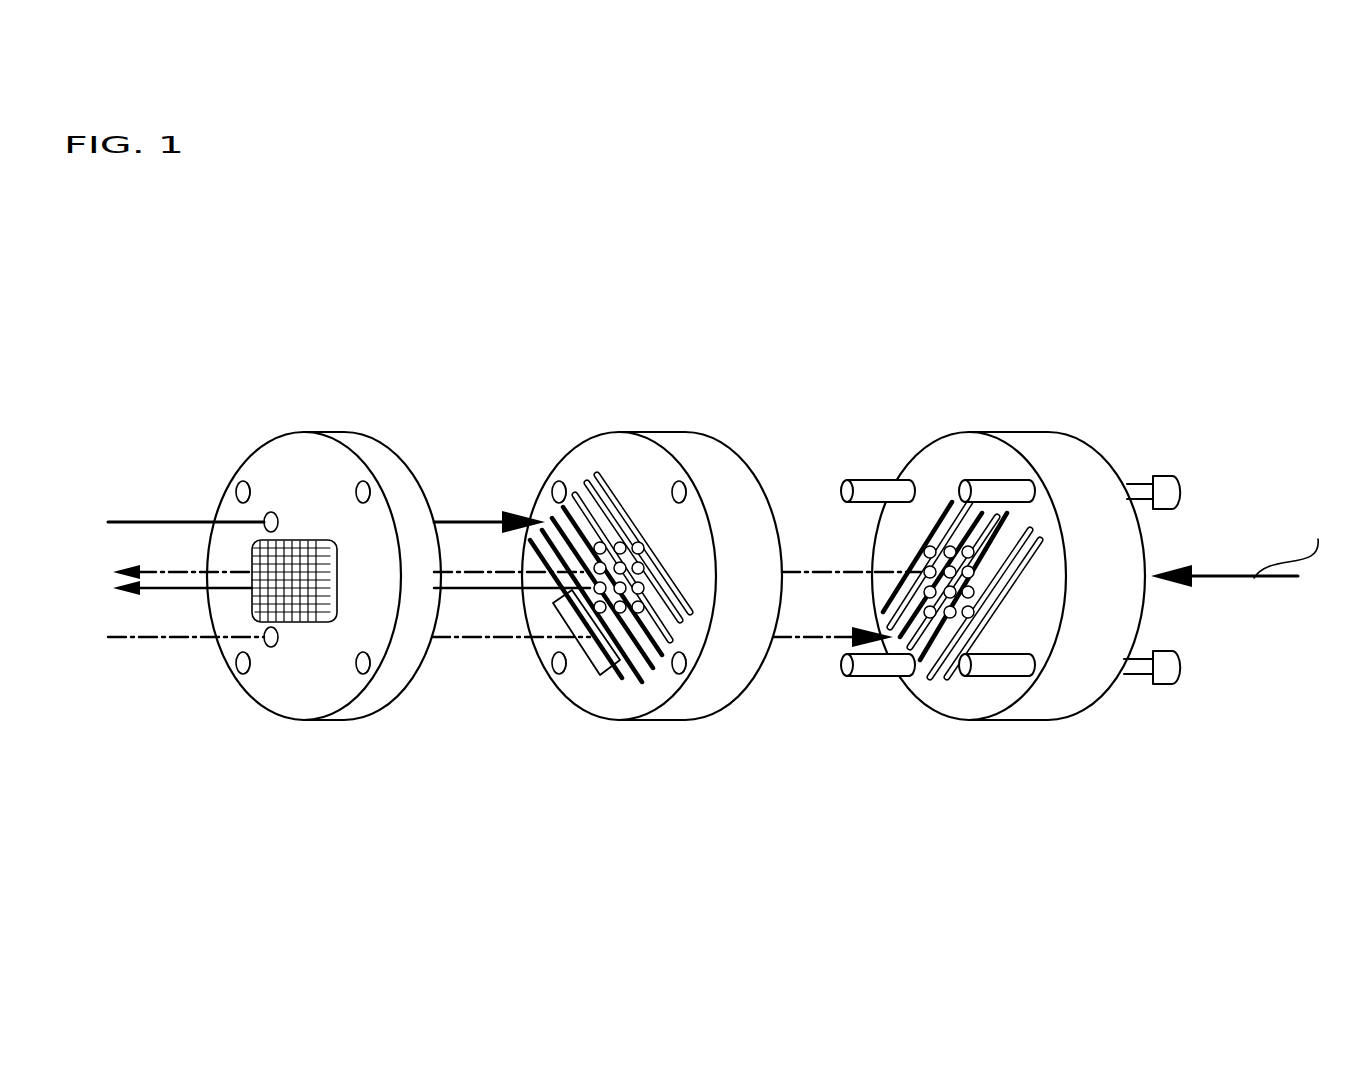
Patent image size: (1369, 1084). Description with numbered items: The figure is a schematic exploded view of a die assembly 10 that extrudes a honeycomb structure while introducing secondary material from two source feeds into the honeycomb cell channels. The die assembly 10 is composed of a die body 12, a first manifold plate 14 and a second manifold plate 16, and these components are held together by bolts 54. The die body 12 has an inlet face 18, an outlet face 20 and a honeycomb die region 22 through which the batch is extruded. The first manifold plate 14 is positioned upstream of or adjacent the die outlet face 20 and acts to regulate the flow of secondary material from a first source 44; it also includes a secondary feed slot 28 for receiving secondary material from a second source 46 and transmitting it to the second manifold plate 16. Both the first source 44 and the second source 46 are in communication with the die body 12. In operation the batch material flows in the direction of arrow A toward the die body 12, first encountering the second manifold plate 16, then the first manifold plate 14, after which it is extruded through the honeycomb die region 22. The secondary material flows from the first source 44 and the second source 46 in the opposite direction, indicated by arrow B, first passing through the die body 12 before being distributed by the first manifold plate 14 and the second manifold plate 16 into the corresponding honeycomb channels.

The die assembly 10 is at (1208, 256).
The die body 12 is at (335, 745).
The first manifold plate 14 is at (644, 632).
The second manifold plate 16 is at (1028, 643).
The inlet face 18 is at (606, 702).
The outlet face 20 is at (712, 692).
The honeycomb die region 22 is at (607, 506).
The secondary feed slot 28 is at (579, 666).
The first source 44 is at (156, 521).
The second source 46 is at (154, 638).
The bolts 54 is at (1138, 479).